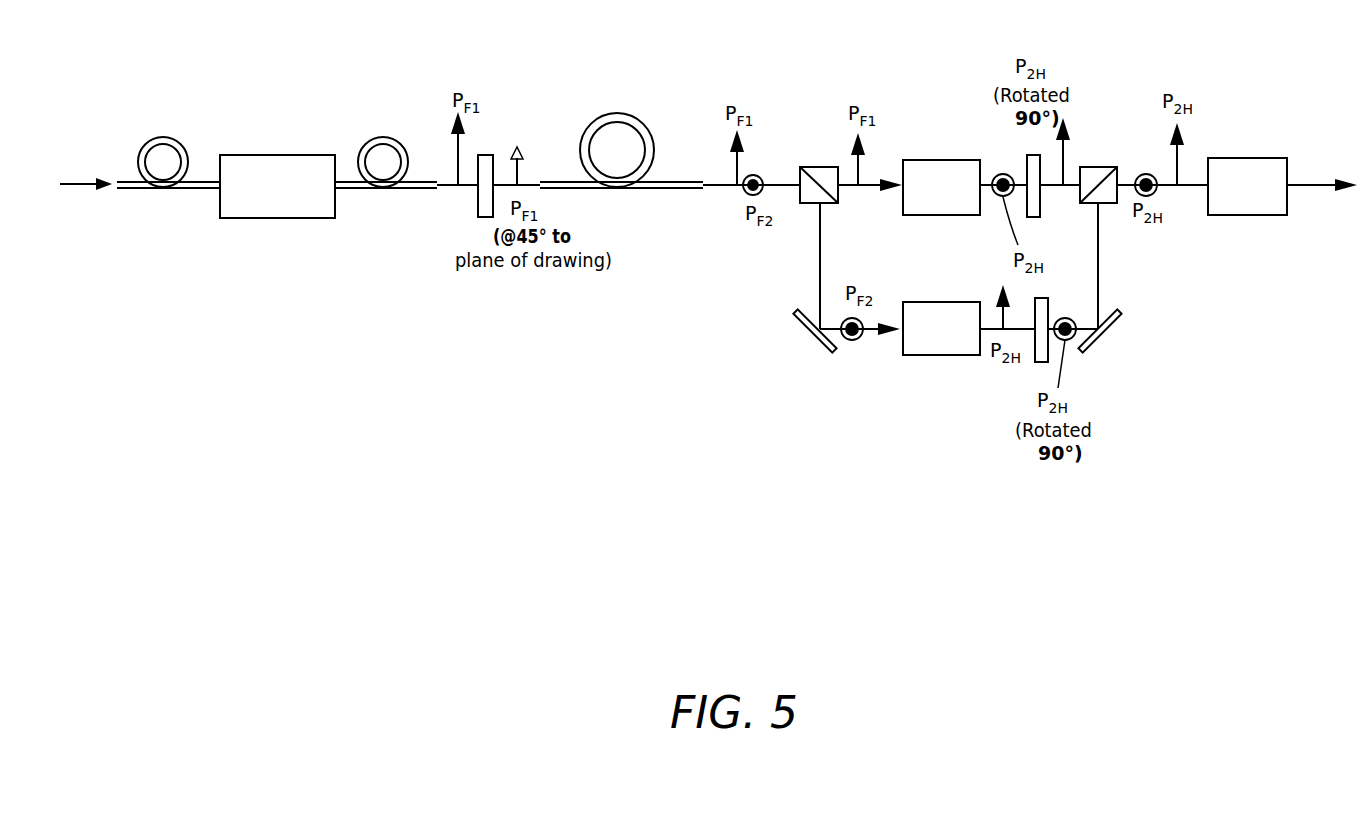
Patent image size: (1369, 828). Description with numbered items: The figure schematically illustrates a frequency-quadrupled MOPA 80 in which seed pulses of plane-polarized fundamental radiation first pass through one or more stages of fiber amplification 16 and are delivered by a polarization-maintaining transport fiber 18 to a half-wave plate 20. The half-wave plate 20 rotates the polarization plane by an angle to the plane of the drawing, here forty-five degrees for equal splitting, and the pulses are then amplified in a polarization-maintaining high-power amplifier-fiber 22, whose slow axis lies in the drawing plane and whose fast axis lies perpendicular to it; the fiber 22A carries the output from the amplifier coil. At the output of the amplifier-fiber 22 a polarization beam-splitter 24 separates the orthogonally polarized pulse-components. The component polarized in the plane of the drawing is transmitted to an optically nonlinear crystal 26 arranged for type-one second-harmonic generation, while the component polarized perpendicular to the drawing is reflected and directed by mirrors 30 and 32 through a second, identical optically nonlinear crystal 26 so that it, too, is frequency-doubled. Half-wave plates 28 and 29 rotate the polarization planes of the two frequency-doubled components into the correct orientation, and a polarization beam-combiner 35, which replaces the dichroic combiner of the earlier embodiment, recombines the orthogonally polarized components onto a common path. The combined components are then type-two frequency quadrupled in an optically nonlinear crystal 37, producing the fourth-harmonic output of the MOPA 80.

The stages of fiber amplification 16 is at (248, 212).
The polarization-maintaining transport fiber 18 is at (383, 137).
The half-wave plate 20 is at (480, 203).
The high-power amplifier-fiber 22 is at (607, 95).
The output fiber 22A is at (548, 185).
The polarization beam-splitter 24 is at (820, 167).
The optically nonlinear crystal 26 is at (938, 160).
The half-wave plate 28 is at (1025, 157).
The half-wave plate 29 is at (1042, 362).
The mirror 30 is at (795, 323).
The mirror 32 is at (1118, 323).
The polarization beam-combiner 35 is at (1103, 167).
The optically nonlinear crystal 37 is at (1222, 210).
The frequency-quadrupled MOPA 80 is at (572, 543).